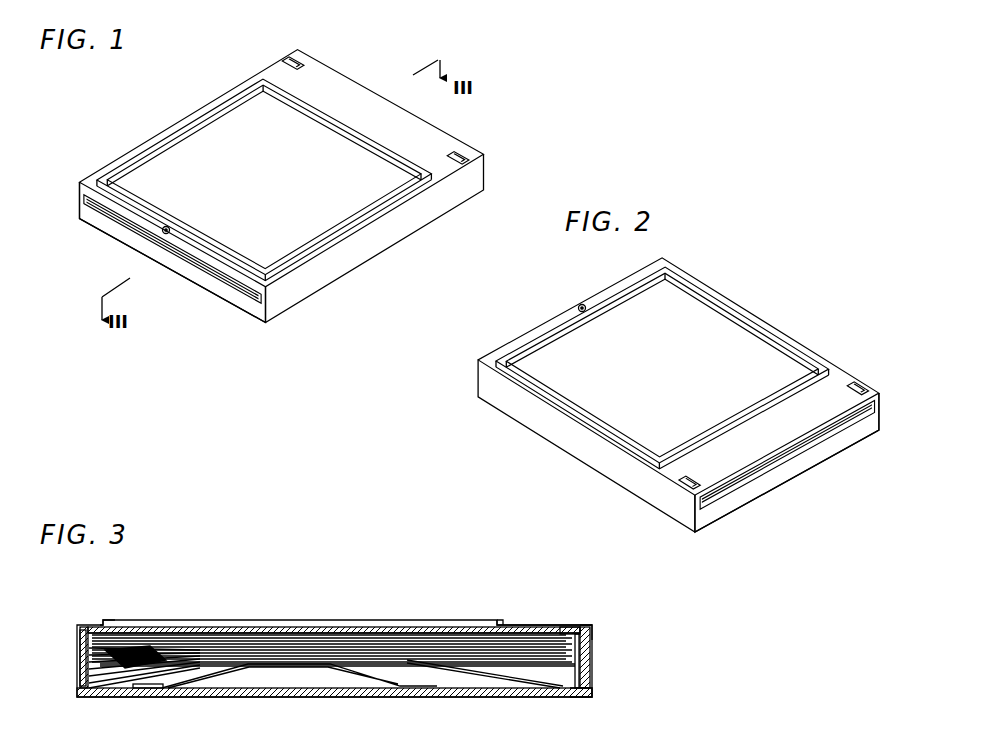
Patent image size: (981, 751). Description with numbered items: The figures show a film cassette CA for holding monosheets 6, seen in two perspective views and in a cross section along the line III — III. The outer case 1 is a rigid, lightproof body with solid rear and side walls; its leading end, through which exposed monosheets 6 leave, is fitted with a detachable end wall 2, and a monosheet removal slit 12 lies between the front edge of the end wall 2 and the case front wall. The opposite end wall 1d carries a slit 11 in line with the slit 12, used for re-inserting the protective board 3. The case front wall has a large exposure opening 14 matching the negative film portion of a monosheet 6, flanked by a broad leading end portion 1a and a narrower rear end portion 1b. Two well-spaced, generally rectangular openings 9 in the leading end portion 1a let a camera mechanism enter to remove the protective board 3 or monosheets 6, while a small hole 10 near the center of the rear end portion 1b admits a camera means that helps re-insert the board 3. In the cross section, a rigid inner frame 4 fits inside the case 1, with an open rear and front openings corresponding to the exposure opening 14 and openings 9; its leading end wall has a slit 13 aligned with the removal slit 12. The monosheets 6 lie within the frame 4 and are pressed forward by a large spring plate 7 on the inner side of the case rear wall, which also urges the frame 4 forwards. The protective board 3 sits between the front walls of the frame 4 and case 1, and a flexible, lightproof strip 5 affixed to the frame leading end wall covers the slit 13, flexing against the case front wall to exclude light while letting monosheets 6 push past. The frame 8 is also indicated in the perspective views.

In FIG. 1, the outer case 1 is at (283, 198).
In FIG. 2, the outer case 1 is at (683, 409).
In FIG. 3, the outer case 1 is at (140, 632).
In FIG. 1, the broad leading end portion 1a is at (432, 148).
In FIG. 1, the narrower rear end portion 1b is at (141, 215).
In FIG. 1, the opposite end wall 1d is at (154, 277).
In FIG. 2, the detachable end wall 2 is at (787, 476).
In FIG. 3, the detachable end wall 2 is at (593, 668).
In FIG. 3, the protective board 3 is at (458, 623).
In FIG. 3, the inner frame 4 is at (577, 693).
In FIG. 3, the strip 5 is at (593, 640).
In FIG. 3, the monosheets 6 is at (483, 677).
In FIG. 3, the spring plate 7 is at (232, 676).
In FIG. 1, the frame 8 is at (318, 250).
In FIG. 2, the frame 8 is at (760, 323).
In FIG. 3, the frame 8 is at (116, 623).
In FIG. 1, the small openings 9 is at (300, 57).
In FIG. 2, the small openings 9 is at (862, 386).
In FIG. 3, the small openings 9 is at (545, 625).
In FIG. 1, the small hole 10 is at (167, 234).
In FIG. 2, the small hole 10 is at (579, 305).
In FIG. 3, the small hole 10 is at (96, 625).
In FIG. 1, the slit 11 is at (172, 284).
In FIG. 3, the slit 11 is at (83, 636).
In FIG. 2, the monosheet removal slit 12 is at (800, 447).
In FIG. 3, the monosheet removal slit 12 is at (593, 625).
In FIG. 3, the slit 13 is at (579, 636).
In FIG. 1, the exposure opening 14 is at (183, 165).
In FIG. 2, the exposure opening 14 is at (557, 375).
In FIG. 1, the cassette CA is at (283, 198).
In FIG. 2, the cassette CA is at (650, 409).
In FIG. 3, the cassette CA is at (337, 656).